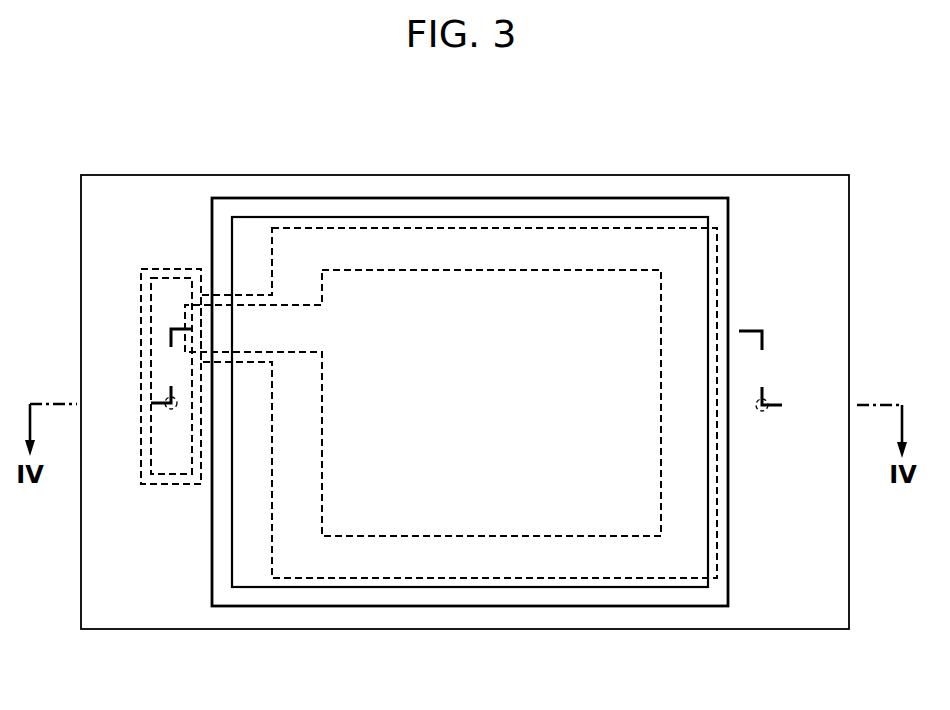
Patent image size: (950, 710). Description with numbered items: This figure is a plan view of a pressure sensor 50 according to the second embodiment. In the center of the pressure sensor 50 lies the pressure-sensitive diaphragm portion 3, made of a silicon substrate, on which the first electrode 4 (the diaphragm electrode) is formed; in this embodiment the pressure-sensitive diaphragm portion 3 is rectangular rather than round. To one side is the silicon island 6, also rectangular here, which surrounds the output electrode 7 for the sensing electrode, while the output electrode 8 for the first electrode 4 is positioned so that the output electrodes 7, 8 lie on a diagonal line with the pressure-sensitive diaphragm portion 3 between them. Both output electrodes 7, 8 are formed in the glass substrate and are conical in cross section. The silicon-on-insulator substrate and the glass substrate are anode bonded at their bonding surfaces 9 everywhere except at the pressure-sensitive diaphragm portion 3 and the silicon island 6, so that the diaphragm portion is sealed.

The pressure sensor 50 is at (504, 142).
The bonding surfaces 9 is at (767, 207).
The pressure-sensitive diaphragm portion 3 is at (451, 352).
The first electrode 4 is at (615, 290).
The silicon island 6 is at (163, 290).
The output electrode 7 is at (165, 398).
The output electrode 8 is at (766, 395).